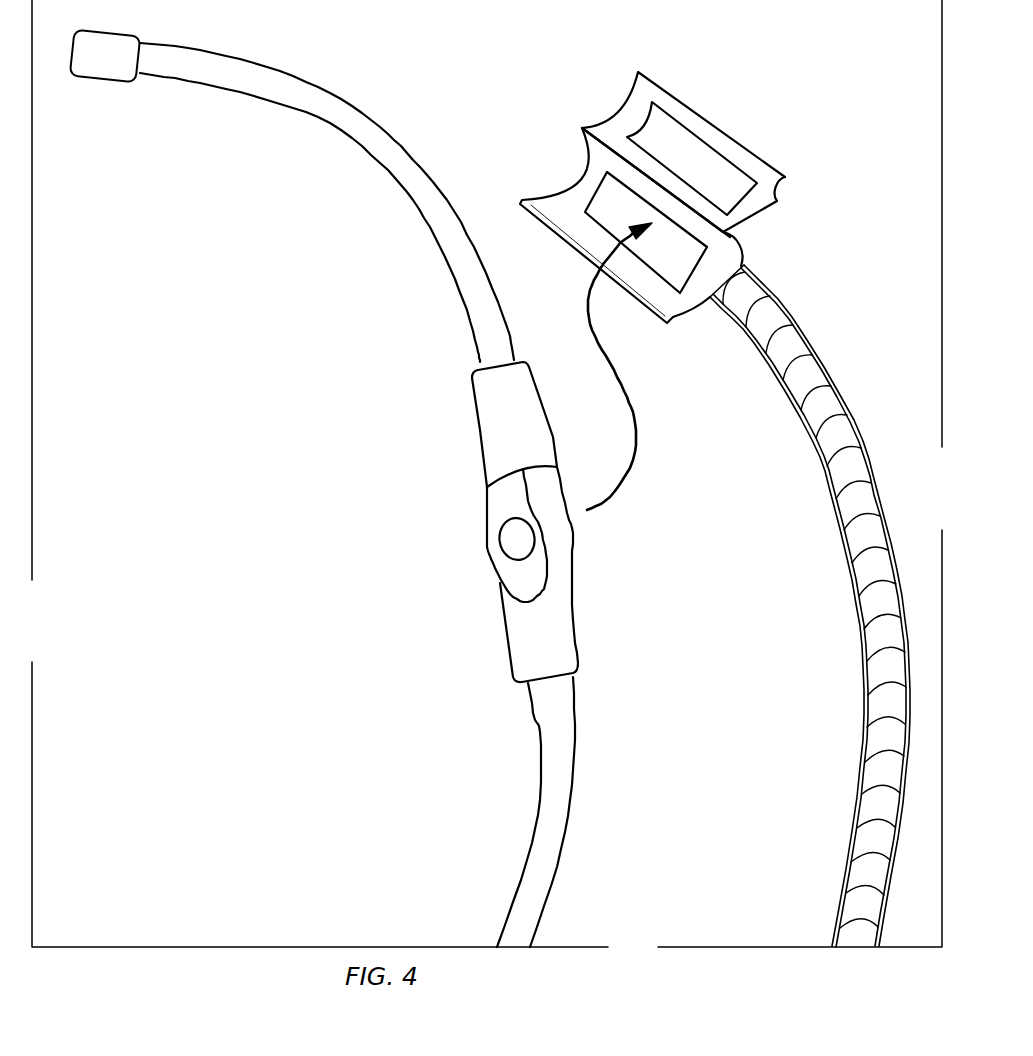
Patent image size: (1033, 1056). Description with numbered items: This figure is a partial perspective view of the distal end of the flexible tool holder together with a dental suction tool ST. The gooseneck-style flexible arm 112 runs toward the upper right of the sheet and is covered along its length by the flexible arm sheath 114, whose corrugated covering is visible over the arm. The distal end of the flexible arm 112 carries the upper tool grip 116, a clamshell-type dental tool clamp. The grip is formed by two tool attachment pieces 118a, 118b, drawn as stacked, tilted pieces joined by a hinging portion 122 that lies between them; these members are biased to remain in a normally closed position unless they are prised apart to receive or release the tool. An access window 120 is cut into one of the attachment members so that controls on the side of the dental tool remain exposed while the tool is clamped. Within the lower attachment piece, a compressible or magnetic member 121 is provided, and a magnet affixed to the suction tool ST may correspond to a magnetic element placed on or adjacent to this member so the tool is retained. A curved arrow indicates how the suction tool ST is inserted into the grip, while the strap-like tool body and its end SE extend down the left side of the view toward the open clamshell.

The flexible arm 112 is at (800, 457).
The flexible arm sheath 114 is at (807, 606).
The upper tool grip 116 is at (617, 210).
The tool attachment piece 118a is at (650, 318).
The tool attachment piece 118b is at (650, 78).
The access window 120 is at (687, 143).
The compressible or magnetic member 121 is at (607, 213).
The hinging portion 122 is at (613, 147).
The strap end SE is at (372, 221).
The suction tool ST is at (452, 527).